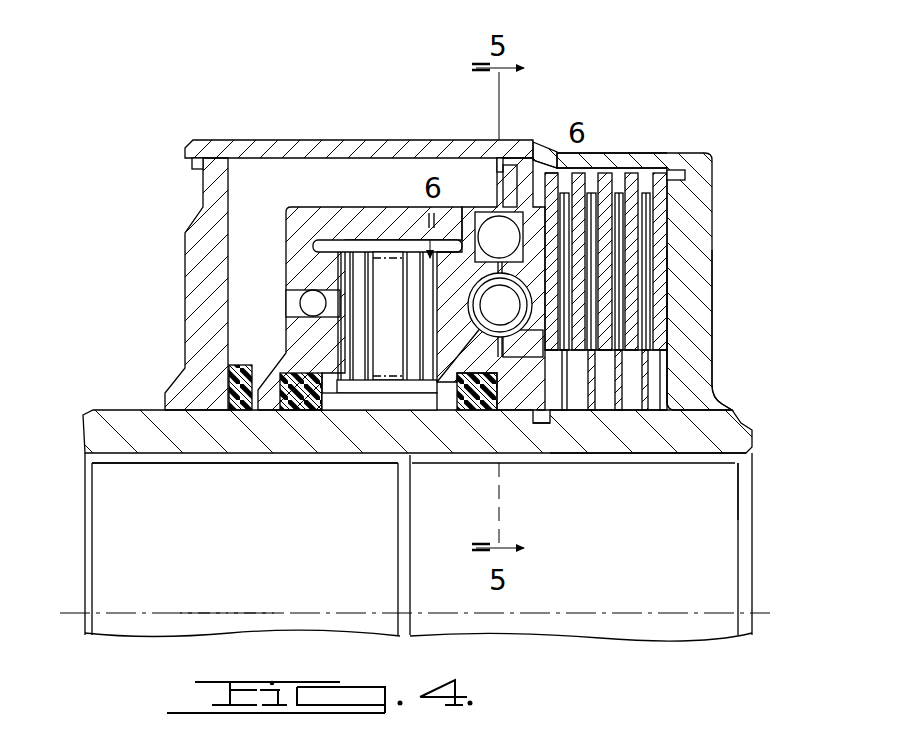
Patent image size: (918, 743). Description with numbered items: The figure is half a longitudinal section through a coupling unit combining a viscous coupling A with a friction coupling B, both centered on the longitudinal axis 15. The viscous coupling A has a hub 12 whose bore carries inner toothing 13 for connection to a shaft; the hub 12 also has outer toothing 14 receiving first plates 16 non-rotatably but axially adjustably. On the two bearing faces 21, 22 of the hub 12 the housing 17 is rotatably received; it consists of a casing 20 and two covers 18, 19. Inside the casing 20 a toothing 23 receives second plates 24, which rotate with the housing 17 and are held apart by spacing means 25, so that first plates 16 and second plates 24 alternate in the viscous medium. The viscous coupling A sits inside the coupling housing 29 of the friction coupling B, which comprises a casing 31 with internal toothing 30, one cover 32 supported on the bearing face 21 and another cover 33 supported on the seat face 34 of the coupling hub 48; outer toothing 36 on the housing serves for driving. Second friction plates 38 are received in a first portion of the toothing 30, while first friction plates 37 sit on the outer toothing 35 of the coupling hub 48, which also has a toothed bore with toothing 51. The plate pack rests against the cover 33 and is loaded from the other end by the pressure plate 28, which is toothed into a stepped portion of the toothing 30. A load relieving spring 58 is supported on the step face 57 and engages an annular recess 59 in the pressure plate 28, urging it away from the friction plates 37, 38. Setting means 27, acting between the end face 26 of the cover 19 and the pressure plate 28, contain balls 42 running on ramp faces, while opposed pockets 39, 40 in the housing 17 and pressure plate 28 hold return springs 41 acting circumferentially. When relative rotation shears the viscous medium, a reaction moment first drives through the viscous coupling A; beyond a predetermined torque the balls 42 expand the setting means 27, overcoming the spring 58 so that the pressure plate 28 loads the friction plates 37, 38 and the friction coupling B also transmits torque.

The hub 12 is at (125, 427).
The inner toothing 13 is at (147, 460).
The outer toothing 14 is at (383, 400).
The longitudinal axis 15 is at (229, 612).
The first plates 16 is at (350, 400).
The housing 17 is at (313, 205).
The cover 18 is at (297, 278).
The cover 19 is at (538, 365).
The casing 20 is at (402, 213).
The bearing face 21 is at (268, 403).
The bearing face 22 is at (512, 403).
The toothing 23 is at (387, 247).
The second plates 24 is at (367, 347).
The spacing means 25 is at (373, 247).
The end face 26 is at (563, 365).
The setting means 27 is at (494, 203).
The pressure plate 28 is at (557, 270).
The coupling housing 29 is at (700, 198).
The toothing 30 is at (645, 177).
The casing 31 is at (223, 153).
The cover 32 is at (197, 307).
The cover 33 is at (695, 293).
The seat face 34 is at (710, 417).
The outer toothing 35 is at (663, 403).
The outer toothing 36 is at (195, 147).
The first friction plates 37 is at (637, 378).
The second friction plates 38 is at (660, 260).
The pocket 39 is at (470, 310).
The pocket 40 is at (610, 378).
The return spring 41 is at (485, 325).
The ball 42 is at (488, 249).
The coupling hub 48 is at (742, 440).
The toothing 51 is at (733, 460).
The step face 57 is at (526, 180).
The load relieving spring 58 is at (532, 190).
The annular recess 59 is at (546, 178).
The viscous coupling A is at (285, 199).
The friction coupling B is at (661, 155).